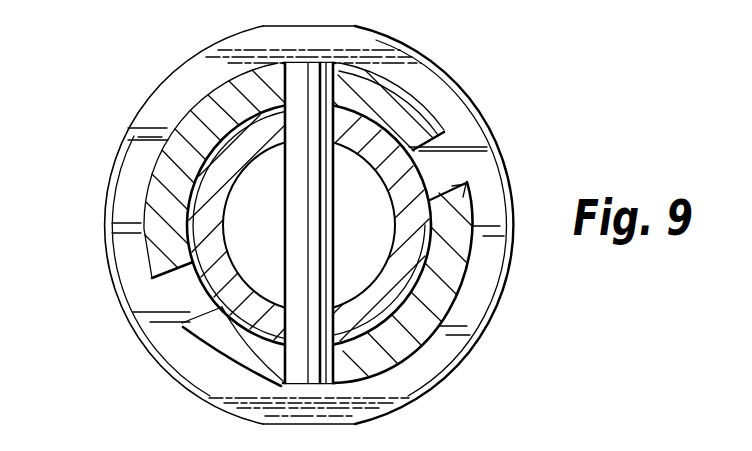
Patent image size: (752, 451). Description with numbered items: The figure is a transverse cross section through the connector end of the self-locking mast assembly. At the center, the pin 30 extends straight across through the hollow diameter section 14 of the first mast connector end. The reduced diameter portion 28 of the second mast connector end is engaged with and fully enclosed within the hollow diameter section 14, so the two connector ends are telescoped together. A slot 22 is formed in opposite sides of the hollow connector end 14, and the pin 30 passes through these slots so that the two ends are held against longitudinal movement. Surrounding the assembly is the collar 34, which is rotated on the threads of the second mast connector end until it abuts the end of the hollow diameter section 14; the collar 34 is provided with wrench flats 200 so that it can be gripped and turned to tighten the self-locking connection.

The hollow diameter section 14 is at (200, 127).
The slot 22 is at (183, 282).
The reduced diameter portion 28 is at (210, 188).
The pin 30 is at (313, 273).
The second collar 34 is at (440, 113).
The wrench flats 200 is at (287, 26).